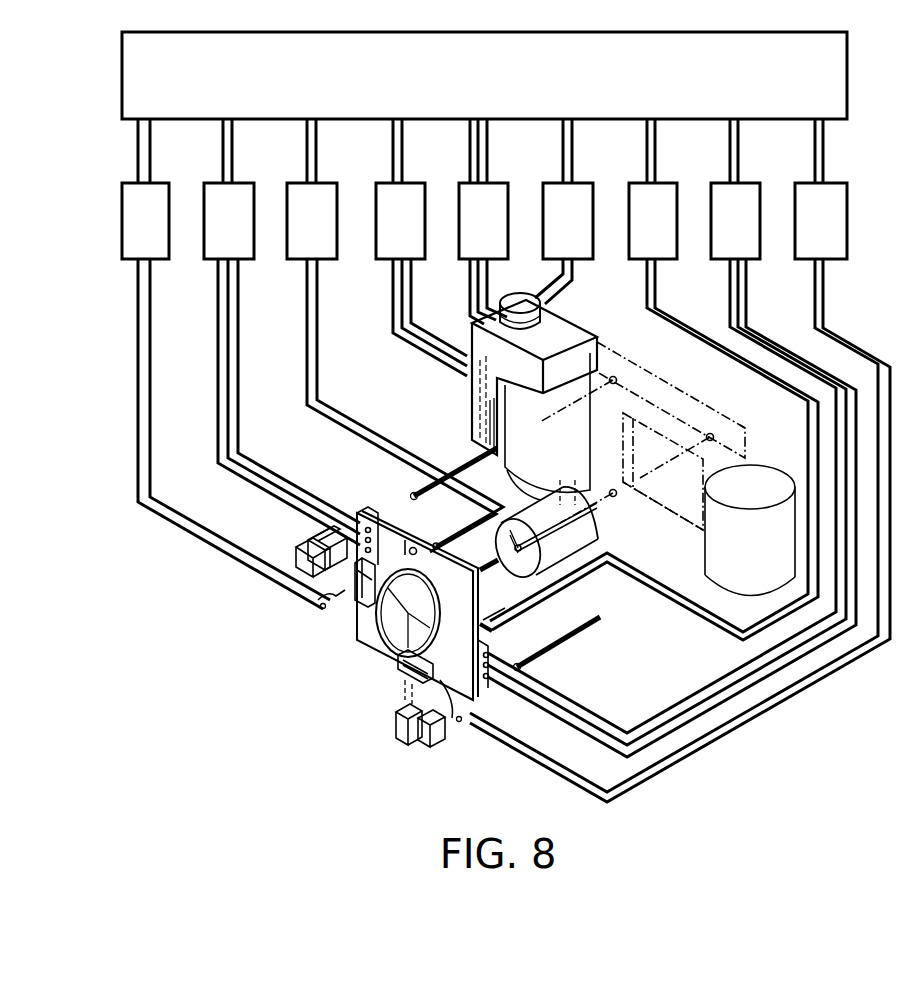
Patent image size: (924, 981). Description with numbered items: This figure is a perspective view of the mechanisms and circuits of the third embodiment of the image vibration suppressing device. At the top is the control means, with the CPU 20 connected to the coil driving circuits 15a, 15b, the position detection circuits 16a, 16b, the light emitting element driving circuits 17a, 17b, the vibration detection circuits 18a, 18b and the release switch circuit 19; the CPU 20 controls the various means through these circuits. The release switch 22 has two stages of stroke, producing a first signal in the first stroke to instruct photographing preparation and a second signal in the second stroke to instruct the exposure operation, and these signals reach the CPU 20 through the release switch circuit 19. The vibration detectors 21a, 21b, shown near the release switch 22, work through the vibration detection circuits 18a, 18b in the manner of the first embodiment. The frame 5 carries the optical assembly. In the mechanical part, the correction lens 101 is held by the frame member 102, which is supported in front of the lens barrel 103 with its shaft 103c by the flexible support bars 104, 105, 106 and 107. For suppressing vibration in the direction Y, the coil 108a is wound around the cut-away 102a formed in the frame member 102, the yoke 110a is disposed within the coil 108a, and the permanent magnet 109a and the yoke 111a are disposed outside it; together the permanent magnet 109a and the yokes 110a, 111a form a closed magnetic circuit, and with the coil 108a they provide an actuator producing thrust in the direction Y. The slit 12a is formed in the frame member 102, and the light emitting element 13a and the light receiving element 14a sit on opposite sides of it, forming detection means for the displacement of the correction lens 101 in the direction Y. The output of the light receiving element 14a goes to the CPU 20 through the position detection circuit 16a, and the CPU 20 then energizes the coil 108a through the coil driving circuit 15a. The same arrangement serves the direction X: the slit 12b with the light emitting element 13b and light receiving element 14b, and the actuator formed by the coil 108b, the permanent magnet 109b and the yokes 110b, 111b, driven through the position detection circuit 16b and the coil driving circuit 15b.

The CPU 20 is at (484, 75).
The coil driving circuit 15a is at (226, 364).
The position detection circuit 16a is at (282, 332).
The light emitting element driving circuit 17a is at (395, 335).
The vibration detection circuit 18b is at (421, 247).
The vibration detection circuit 18a is at (483, 221).
The release switch circuit 19 is at (565, 211).
The light emitting element driving circuit 17b is at (654, 379).
The position detection circuit 16b is at (672, 438).
The coil driving circuit 15b is at (680, 460).
The release switch 22 is at (521, 297).
The vibration detector 21a is at (572, 326).
The vibration detector 21b is at (472, 412).
The flexible support bar 106 is at (452, 475).
The frame 5 is at (668, 383).
The flexible support bar 105 is at (570, 492).
The light receiving element 14a is at (371, 522).
The slit 12a is at (414, 546).
The light emitting element 13a is at (440, 546).
The permanent magnet 109a is at (305, 535).
The yoke 110a is at (310, 545).
The yoke 111a is at (300, 572).
The coil 108a is at (355, 592).
The cut-away 102a is at (370, 612).
The correction lens 101 is at (390, 652).
The frame member 102 is at (405, 668).
The coil 108b is at (400, 698).
The lens barrel 103 is at (578, 547).
The motor shaft 103c is at (548, 567).
The flexible support bar 107 is at (490, 571).
The light emitting element 13b is at (492, 626).
The slit 12b is at (487, 633).
The flexible support bar 104 is at (585, 632).
The light receiving element 14b is at (482, 690).
The permanent magnet 109b is at (440, 720).
The yoke 111b is at (410, 742).
The yoke 110b is at (440, 748).